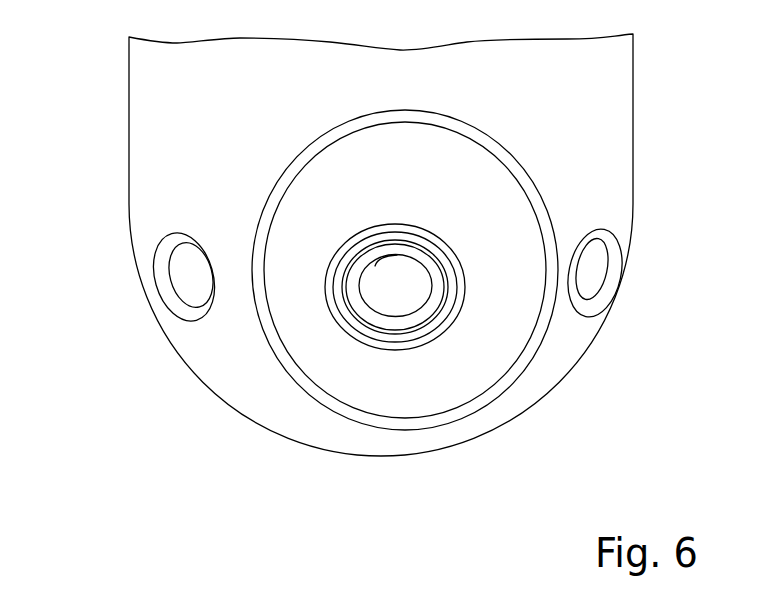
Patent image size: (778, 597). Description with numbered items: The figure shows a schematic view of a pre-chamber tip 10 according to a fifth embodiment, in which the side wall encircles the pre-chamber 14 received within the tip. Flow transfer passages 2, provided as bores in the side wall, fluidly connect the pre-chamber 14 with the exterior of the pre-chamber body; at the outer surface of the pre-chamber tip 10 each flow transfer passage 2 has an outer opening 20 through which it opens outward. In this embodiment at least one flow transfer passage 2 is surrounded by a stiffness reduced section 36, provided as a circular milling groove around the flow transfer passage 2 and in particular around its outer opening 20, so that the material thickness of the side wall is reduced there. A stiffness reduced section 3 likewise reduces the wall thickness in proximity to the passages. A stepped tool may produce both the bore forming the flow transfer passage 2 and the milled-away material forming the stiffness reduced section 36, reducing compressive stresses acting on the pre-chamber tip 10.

The pre-chamber tip 10 is at (662, 88).
The flow transfer passage 2 is at (383, 303).
The stiffness reduced section 3 is at (463, 377).
The pre-chamber 14 is at (376, 268).
The outer opening 20 is at (407, 286).
The stiffness reduced section 36 is at (333, 375).